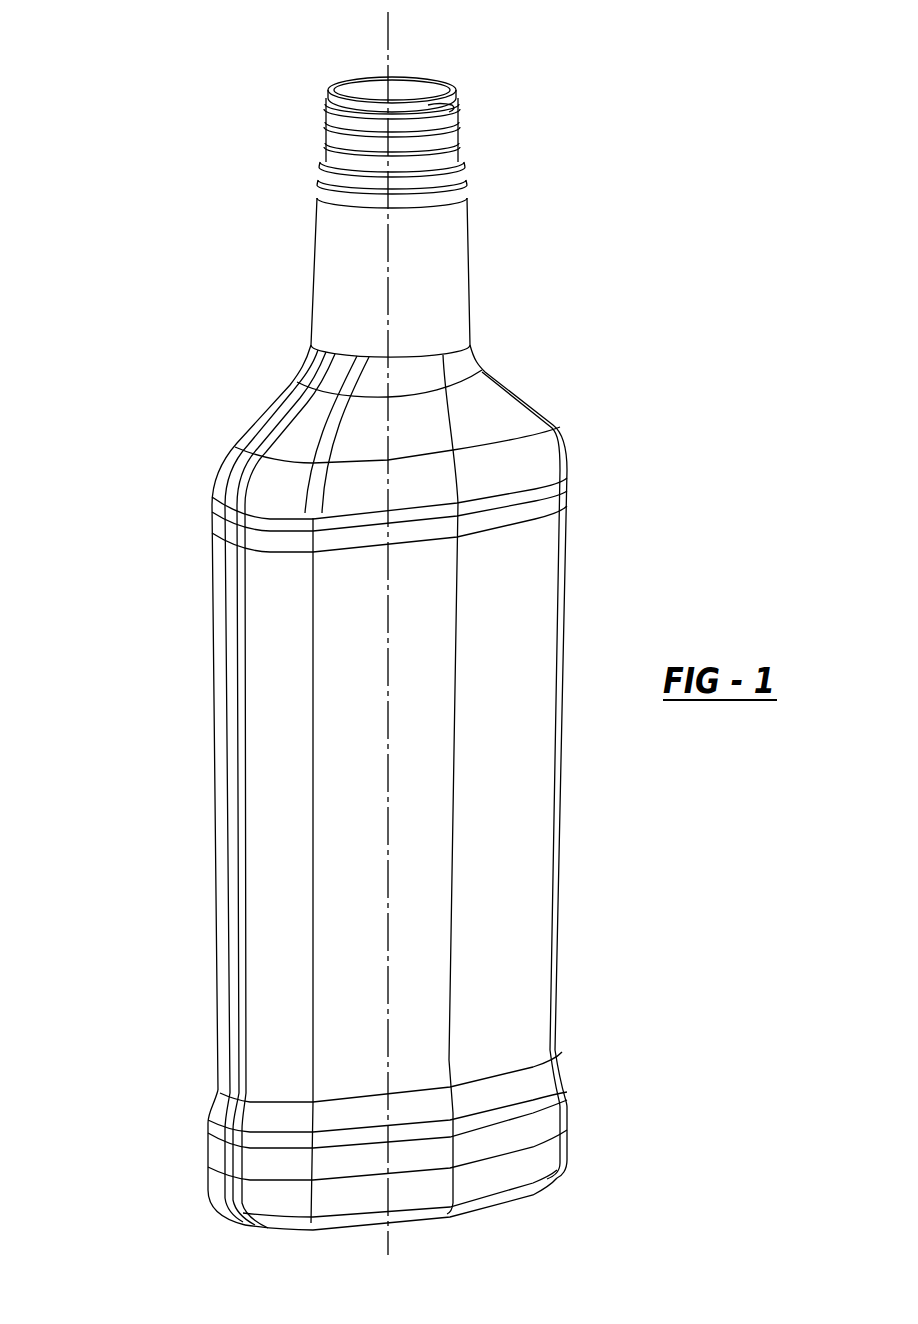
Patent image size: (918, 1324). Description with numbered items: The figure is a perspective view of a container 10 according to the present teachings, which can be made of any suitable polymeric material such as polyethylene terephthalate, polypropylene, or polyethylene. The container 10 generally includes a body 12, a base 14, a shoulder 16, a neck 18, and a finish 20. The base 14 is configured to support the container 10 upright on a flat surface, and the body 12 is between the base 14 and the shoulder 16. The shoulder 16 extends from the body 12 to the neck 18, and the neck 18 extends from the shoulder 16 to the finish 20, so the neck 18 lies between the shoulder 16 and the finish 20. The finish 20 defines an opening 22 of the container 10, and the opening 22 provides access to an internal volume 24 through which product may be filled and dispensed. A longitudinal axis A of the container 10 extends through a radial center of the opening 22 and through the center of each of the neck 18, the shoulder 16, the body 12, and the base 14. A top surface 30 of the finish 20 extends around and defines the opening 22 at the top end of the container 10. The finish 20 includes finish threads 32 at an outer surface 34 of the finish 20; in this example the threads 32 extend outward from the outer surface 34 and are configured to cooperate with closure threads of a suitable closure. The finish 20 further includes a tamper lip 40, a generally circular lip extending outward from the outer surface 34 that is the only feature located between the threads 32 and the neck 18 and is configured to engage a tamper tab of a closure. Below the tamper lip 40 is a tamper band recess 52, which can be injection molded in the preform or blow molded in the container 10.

The container 10 is at (186, 82).
The body 12 is at (517, 812).
The base 14 is at (503, 1198).
The shoulder 16 is at (262, 412).
The neck 18 is at (333, 267).
The finish 20 is at (460, 100).
The opening 22 is at (418, 93).
The internal volume 24 is at (500, 608).
The top surface 30 is at (327, 88).
The finish threads 32 is at (320, 110).
The outer surface 34 is at (457, 108).
The tamper lip 40 is at (453, 160).
The tamper band recess 52 is at (318, 171).
The longitudinal axis A is at (387, 32).